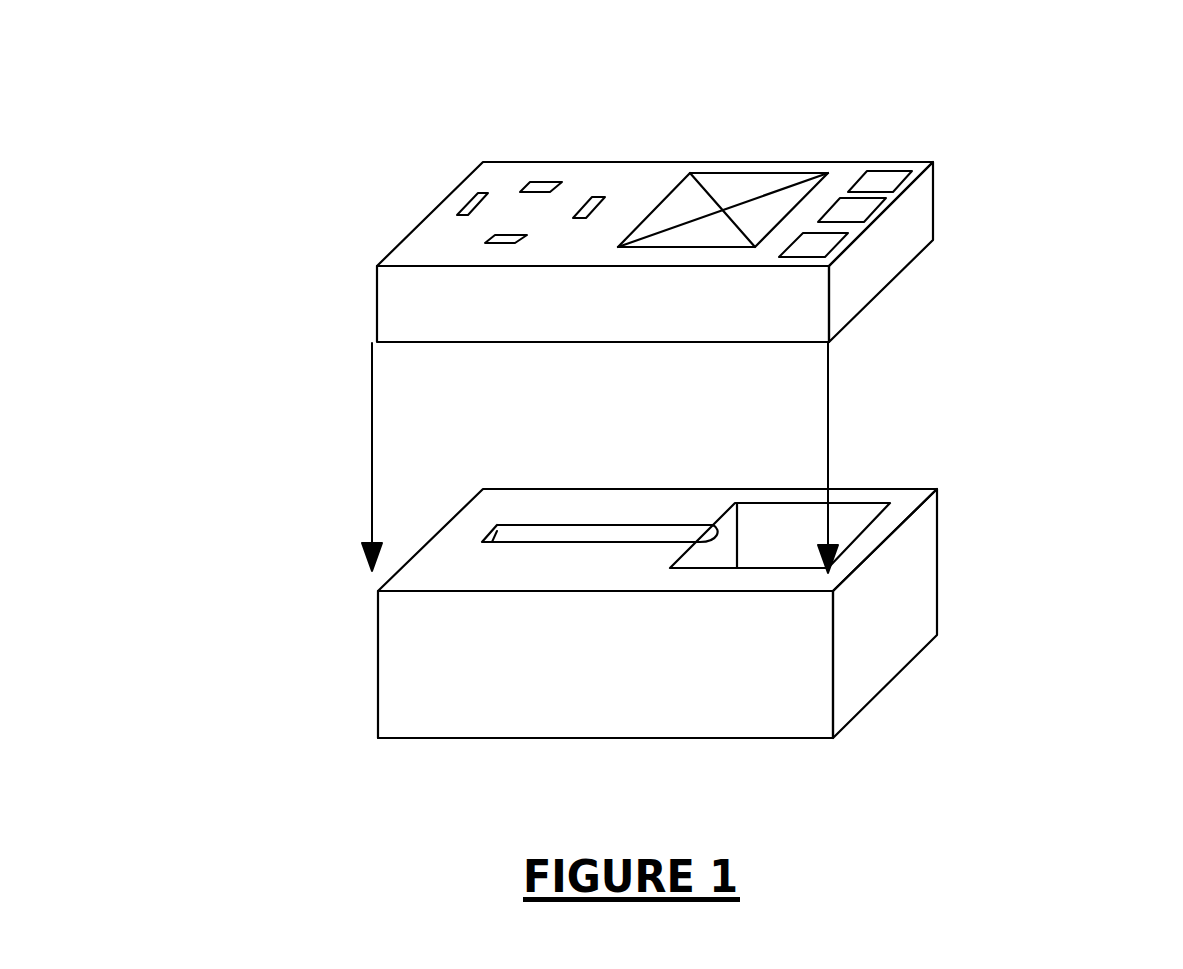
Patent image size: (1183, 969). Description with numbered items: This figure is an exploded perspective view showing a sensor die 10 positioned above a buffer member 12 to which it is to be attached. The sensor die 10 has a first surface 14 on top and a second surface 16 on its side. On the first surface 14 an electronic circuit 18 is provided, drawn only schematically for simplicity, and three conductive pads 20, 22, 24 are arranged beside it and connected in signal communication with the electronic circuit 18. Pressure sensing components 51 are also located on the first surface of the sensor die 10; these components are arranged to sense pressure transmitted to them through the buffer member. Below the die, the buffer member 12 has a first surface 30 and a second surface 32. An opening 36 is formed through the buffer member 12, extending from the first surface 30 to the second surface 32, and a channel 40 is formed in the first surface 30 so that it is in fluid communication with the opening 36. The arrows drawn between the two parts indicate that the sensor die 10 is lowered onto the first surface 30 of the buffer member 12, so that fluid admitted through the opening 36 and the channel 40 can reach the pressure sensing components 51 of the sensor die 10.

The sensor die 10 is at (642, 235).
The buffer member 12 is at (671, 620).
The first surface 14 is at (403, 247).
The second surface 16 is at (857, 313).
The electronic circuit 18 is at (737, 187).
The conductive pad 20 is at (880, 180).
The conductive pad 22 is at (845, 208).
The conductive pad 24 is at (817, 243).
The first surface 30 is at (430, 570).
The second surface 32 is at (813, 742).
The opening 36 is at (848, 520).
The channel 40 is at (570, 537).
The pressure sensing components 51 is at (542, 183).